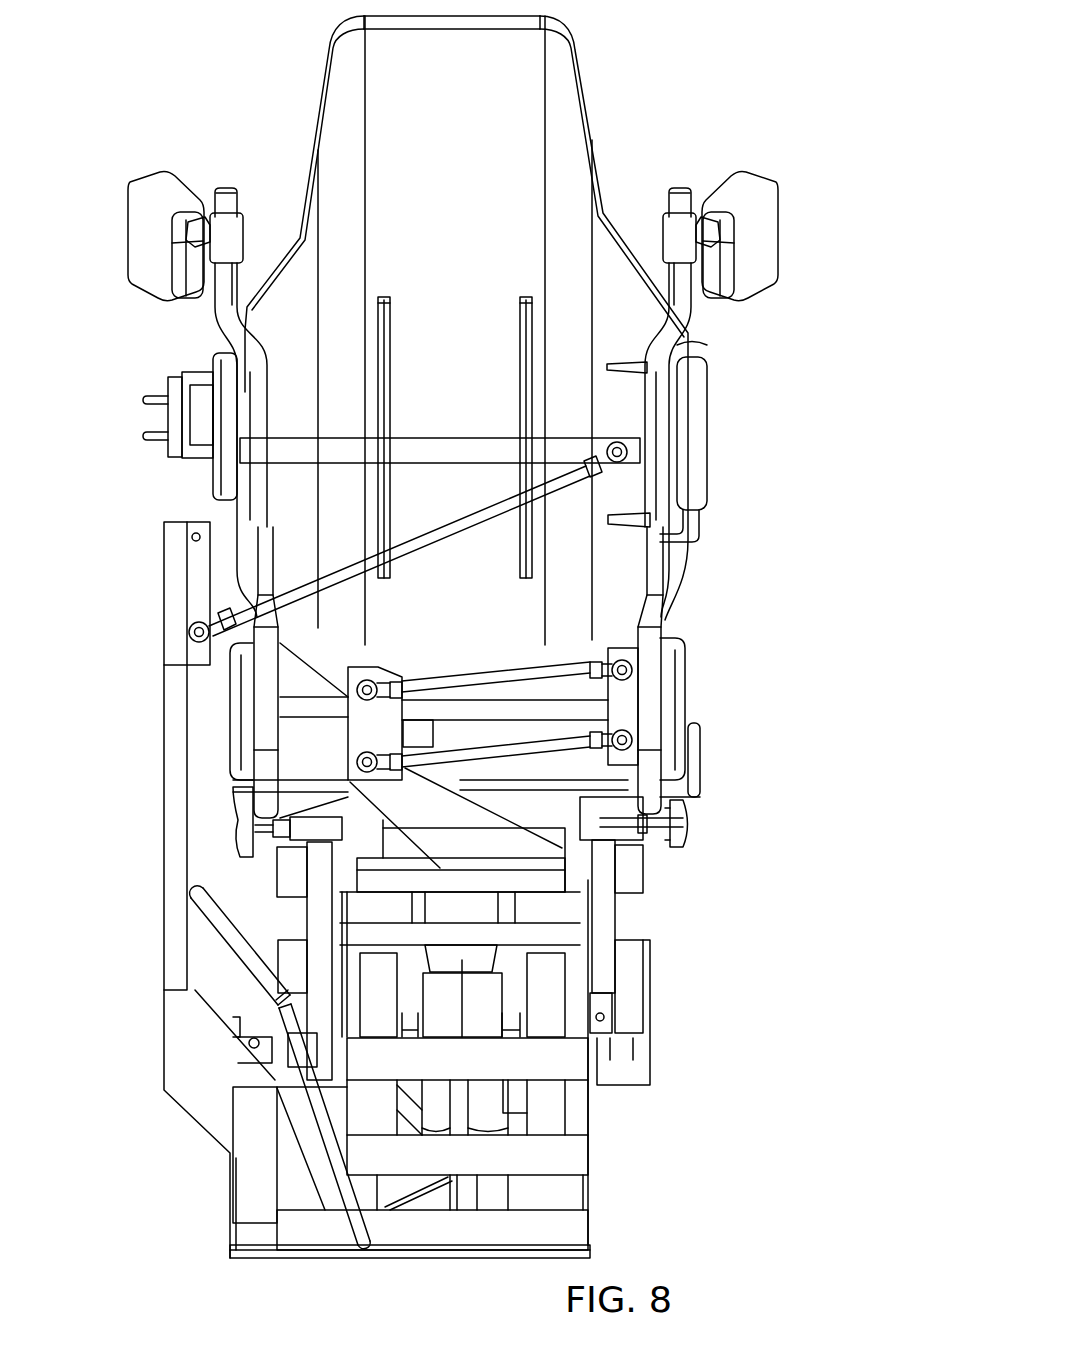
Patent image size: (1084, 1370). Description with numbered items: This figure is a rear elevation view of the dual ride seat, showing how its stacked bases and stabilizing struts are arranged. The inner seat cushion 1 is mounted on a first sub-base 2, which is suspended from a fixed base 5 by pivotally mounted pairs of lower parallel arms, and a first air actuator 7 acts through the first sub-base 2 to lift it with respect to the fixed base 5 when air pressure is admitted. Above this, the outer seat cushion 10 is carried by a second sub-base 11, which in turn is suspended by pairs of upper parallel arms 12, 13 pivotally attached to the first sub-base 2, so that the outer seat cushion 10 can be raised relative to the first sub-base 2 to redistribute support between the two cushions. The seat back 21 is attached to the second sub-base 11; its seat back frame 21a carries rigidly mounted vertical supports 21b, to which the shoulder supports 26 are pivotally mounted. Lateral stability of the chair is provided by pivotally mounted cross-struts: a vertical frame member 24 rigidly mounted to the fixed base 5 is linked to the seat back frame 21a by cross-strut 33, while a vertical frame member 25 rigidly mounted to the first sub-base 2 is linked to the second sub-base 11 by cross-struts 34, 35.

The inner seat cushion 1 is at (690, 822).
The first sub-base 2 is at (553, 878).
The fixed base 5 is at (430, 1257).
The first air actuator 7 is at (490, 998).
The outer seat cushion 10 is at (232, 700).
The second sub-base 11 is at (650, 660).
The upper parallel arms 12 is at (295, 917).
The upper parallel arms 13 is at (303, 1008).
The seat back 21 is at (578, 60).
The seat back frame 21a is at (437, 440).
The vertical supports 21b is at (228, 322).
The fixed base vertical frame member 24 is at (168, 698).
The first sub-base vertical frame member 25 is at (370, 737).
The shoulder supports 26 is at (137, 217).
The cross-strut 33 is at (350, 583).
The cross-strut 34 is at (567, 673).
The cross-strut 35 is at (565, 735).